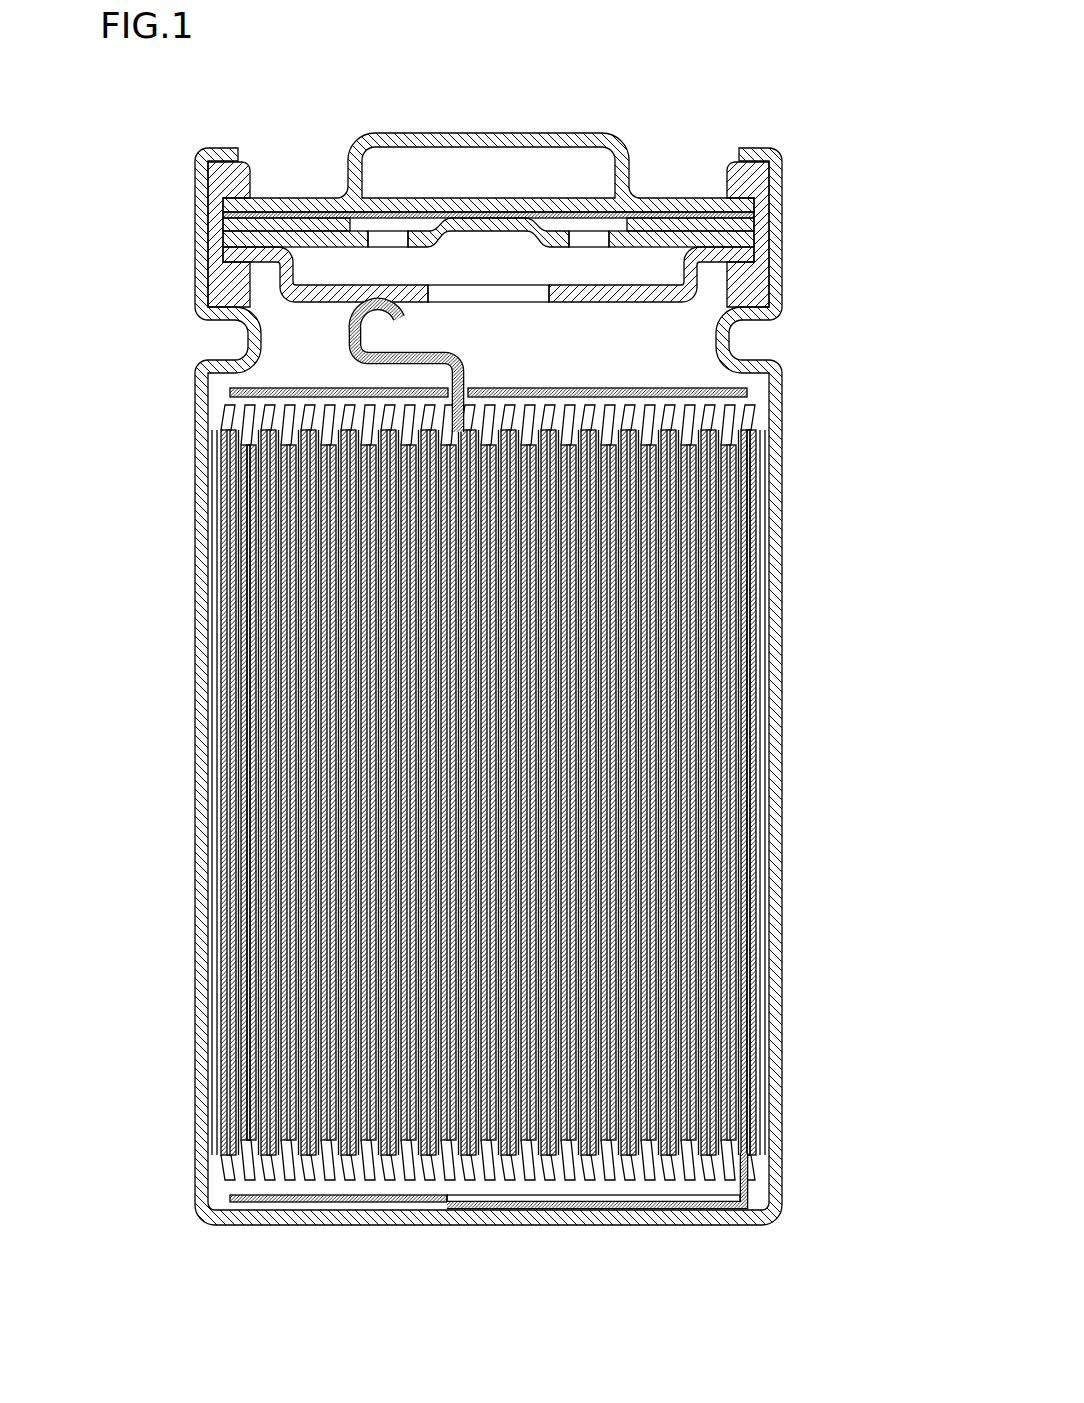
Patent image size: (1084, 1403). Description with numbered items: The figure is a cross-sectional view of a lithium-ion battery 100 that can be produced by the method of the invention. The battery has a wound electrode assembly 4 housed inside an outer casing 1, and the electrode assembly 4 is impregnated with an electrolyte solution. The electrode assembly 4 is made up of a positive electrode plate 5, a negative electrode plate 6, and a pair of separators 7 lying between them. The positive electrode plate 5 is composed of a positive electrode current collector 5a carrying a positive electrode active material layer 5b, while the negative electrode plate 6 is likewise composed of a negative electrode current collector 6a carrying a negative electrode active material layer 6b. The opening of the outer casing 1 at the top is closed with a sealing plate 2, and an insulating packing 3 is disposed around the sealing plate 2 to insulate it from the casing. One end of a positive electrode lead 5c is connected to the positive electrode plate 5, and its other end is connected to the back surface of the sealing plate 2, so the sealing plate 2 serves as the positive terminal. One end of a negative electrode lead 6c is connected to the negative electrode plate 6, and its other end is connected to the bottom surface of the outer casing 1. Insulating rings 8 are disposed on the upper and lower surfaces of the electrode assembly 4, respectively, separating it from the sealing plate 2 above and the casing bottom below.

The lithium-ion battery 100 is at (640, 79).
The outer casing 1 is at (783, 541).
The sealing plate 2 is at (427, 132).
The insulating packing 3 is at (760, 174).
The electrode assembly 4 is at (494, 752).
The positive electrode plate 5 is at (406, 792).
The positive electrode current collector 5a is at (245, 707).
The positive electrode active material layer 5b is at (242, 665).
The positive electrode lead 5c is at (352, 330).
The negative electrode plate 6 is at (566, 792).
The negative electrode current collector 6a is at (760, 751).
The negative electrode active material layer 6b is at (760, 809).
The negative electrode lead 6c is at (750, 1186).
The separators 7 is at (225, 915).
The insulating rings 8 is at (240, 393).